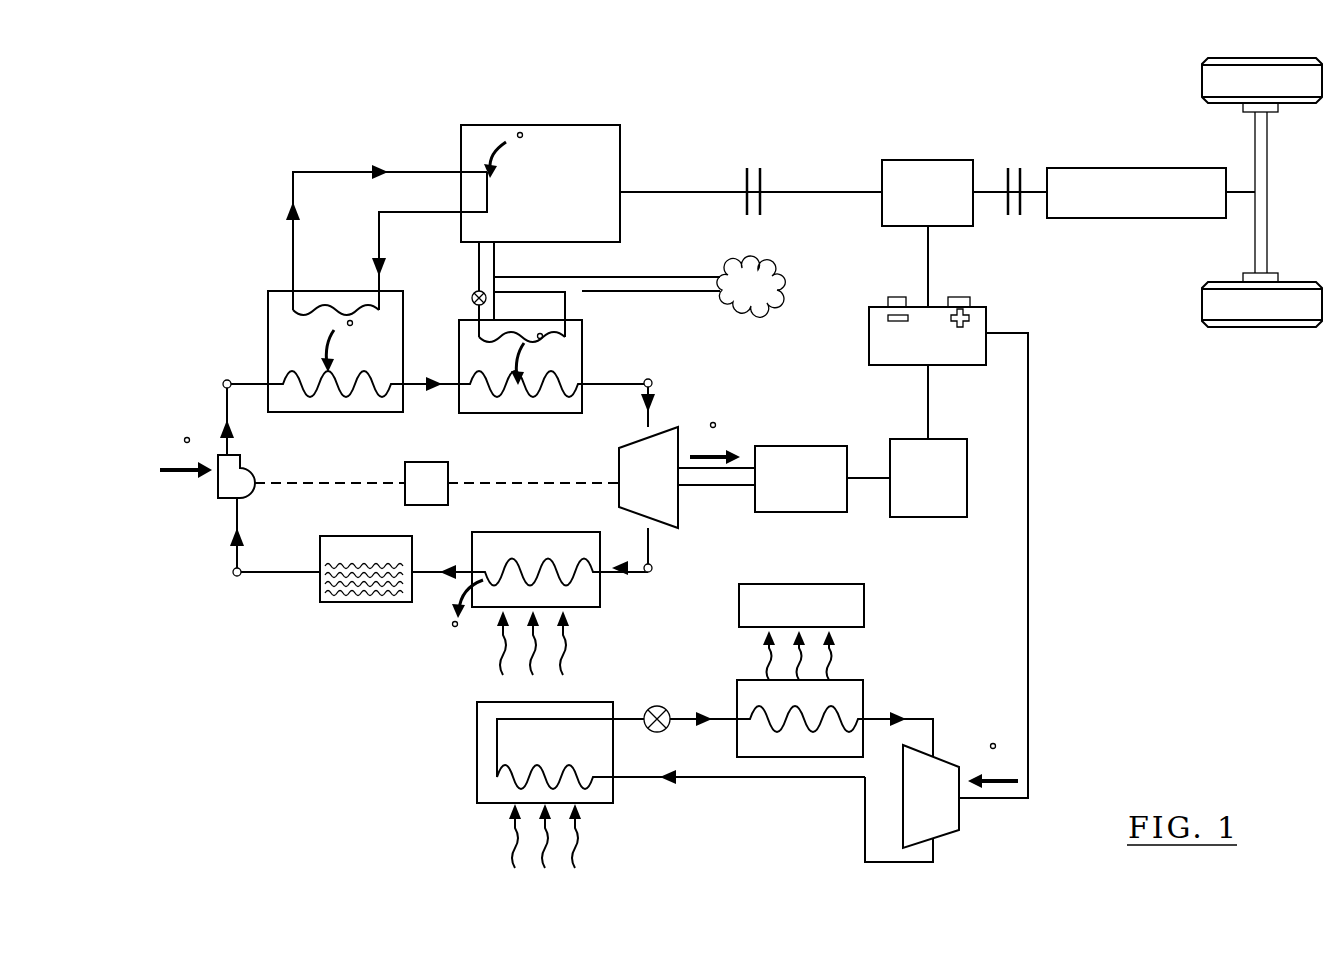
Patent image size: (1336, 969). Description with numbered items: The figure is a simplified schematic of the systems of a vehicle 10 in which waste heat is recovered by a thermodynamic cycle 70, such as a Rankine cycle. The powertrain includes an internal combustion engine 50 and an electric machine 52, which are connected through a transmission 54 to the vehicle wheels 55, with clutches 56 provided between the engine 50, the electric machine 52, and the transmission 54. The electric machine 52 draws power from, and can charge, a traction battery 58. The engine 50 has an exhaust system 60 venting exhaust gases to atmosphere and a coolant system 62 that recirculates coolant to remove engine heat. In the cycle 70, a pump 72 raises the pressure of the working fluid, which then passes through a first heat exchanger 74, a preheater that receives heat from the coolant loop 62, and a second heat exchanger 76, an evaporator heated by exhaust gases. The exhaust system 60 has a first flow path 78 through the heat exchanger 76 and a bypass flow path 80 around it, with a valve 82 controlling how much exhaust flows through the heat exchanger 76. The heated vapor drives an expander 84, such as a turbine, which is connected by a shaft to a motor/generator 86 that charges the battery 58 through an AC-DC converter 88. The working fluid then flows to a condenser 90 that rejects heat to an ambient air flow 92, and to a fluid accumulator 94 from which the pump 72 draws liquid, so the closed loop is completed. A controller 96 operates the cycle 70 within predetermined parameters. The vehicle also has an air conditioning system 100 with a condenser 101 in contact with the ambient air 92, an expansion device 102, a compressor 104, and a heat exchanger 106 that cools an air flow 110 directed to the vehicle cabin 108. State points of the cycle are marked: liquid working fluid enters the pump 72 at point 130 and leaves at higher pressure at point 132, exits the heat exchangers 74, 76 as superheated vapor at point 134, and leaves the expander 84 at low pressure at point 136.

The vehicle 10 is at (1135, 624).
The internal combustion engine 50 is at (620, 152).
The electric machine 52 is at (893, 160).
The transmission 54 is at (1130, 168).
The vehicle wheels 55 is at (1220, 328).
The clutches 56 is at (756, 165).
The traction battery 58 is at (869, 318).
The exhaust system 60 is at (620, 277).
The coolant system 62 is at (332, 172).
The thermodynamic cycle 70 is at (230, 650).
The pump 72 is at (250, 497).
The first heat exchanger 74 is at (355, 412).
The second heat exchanger 76 is at (500, 412).
The first flow path 78 is at (522, 335).
The bypass flow path 80 is at (522, 277).
The valve 82 is at (474, 295).
The expander 84 is at (674, 428).
The motor/generator 86 is at (797, 446).
The AC-DC converter 88 is at (967, 470).
The condenser 90 is at (524, 532).
The ambient air flow 92 is at (572, 663).
The fluid accumulator 94 is at (363, 603).
The controller 96 is at (437, 483).
The air conditioning system 100 is at (727, 815).
The first heat exchanger 101 is at (477, 777).
The expansion device 102 is at (652, 706).
The compressor 104 is at (945, 757).
The heat exchanger 106 is at (863, 697).
The vehicle cabin 108 is at (808, 584).
The air flow 110 is at (756, 658).
The point 130 is at (261, 587).
The point 132 is at (232, 403).
The point 134 is at (650, 389).
The point 136 is at (651, 570).